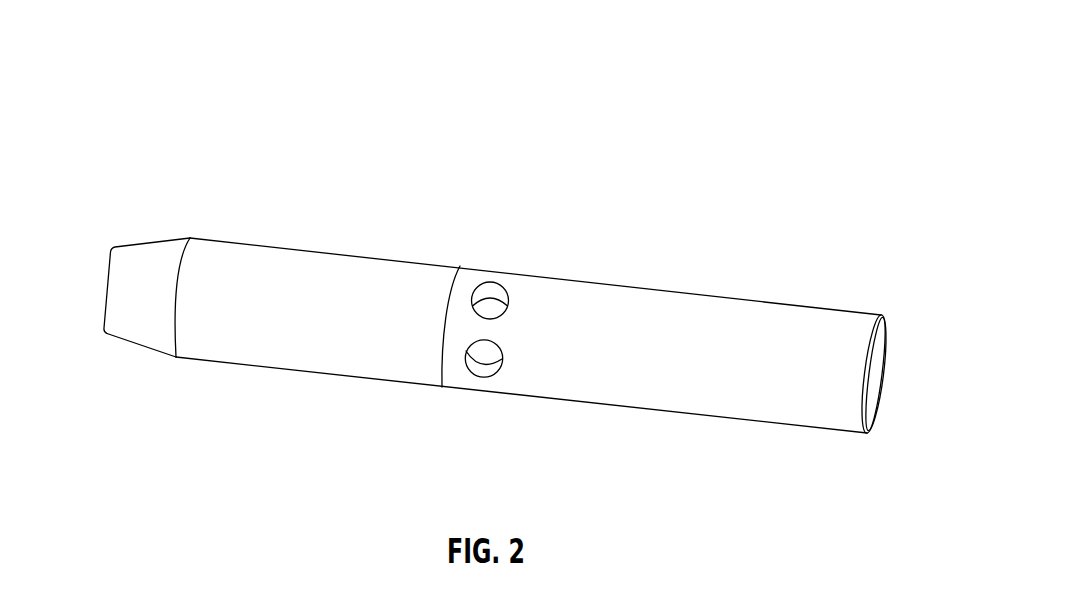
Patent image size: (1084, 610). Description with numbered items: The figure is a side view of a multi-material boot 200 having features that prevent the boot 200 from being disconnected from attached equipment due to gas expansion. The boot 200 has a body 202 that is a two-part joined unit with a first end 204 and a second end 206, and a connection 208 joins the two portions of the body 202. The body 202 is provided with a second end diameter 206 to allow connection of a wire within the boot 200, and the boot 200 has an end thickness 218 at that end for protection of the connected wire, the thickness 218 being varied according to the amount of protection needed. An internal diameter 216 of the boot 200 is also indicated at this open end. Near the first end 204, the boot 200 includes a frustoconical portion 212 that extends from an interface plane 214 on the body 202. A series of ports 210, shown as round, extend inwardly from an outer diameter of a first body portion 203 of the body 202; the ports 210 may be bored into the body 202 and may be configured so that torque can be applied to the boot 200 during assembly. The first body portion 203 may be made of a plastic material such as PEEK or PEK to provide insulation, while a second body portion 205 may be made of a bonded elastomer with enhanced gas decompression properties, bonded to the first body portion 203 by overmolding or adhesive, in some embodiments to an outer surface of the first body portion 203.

The multi-material boot 200 is at (544, 116).
The body 202 is at (649, 267).
The first body portion 203 is at (572, 278).
The first end 204 is at (109, 268).
The second body portion 205 is at (337, 376).
The second end 206 is at (886, 326).
The connection 208 is at (460, 266).
The series of ports 210 is at (482, 366).
The frustoconical portion 212 is at (138, 334).
The interface plane 214 is at (190, 238).
The internal diameter 216 is at (872, 380).
The end thickness 218 is at (868, 436).